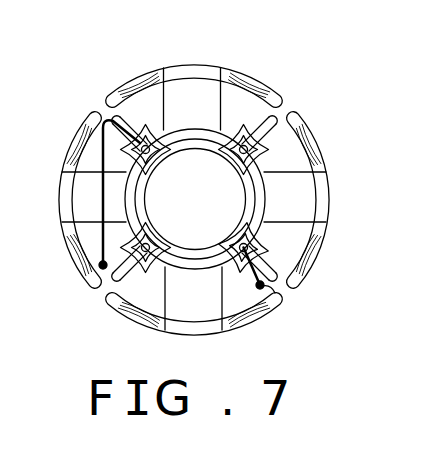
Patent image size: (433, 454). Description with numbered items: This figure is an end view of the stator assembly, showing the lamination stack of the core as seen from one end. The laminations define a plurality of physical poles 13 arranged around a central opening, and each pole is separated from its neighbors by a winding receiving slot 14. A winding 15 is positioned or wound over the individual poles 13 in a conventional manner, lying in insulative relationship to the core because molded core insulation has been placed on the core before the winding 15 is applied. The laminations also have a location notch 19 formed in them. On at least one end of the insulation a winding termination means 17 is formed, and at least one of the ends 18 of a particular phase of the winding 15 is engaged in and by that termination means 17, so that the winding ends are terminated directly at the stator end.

The physical pole 13 is at (243, 71).
The winding receiving slot 14 is at (283, 108).
The winding 15 is at (138, 110).
The winding termination means 17 is at (162, 127).
The end of the winding 18 is at (117, 143).
The location notch 19 is at (186, 151).